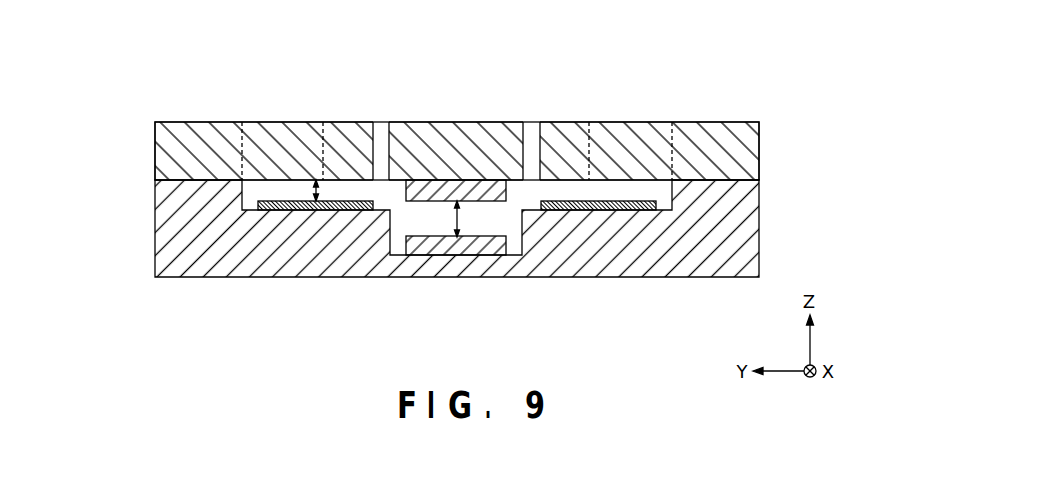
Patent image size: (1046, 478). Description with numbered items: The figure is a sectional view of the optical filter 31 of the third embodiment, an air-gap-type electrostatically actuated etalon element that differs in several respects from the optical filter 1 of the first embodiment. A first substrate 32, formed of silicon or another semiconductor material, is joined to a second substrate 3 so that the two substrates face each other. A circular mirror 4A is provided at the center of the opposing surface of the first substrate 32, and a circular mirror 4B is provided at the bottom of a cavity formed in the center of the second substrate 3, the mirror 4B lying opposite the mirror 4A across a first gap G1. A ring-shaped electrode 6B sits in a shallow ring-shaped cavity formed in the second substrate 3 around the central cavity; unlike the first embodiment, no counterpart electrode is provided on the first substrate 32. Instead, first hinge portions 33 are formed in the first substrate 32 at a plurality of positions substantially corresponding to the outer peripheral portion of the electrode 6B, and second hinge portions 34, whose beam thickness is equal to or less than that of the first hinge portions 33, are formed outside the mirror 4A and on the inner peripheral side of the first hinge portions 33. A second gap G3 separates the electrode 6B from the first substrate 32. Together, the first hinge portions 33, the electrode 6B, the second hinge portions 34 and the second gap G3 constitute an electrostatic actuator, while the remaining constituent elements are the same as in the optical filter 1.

The optical filter 1 is at (133, 82).
The optical filter 31 is at (750, 104).
The first substrate 32 is at (753, 152).
The second substrate 3 is at (753, 245).
The first hinge portions 33 is at (267, 127).
The second hinge portions 34 is at (385, 128).
The mirror 4A is at (437, 190).
The mirror 4B is at (443, 255).
The electrode 6B is at (323, 210).
The first gap G1 is at (470, 219).
The second gap G3 is at (312, 189).